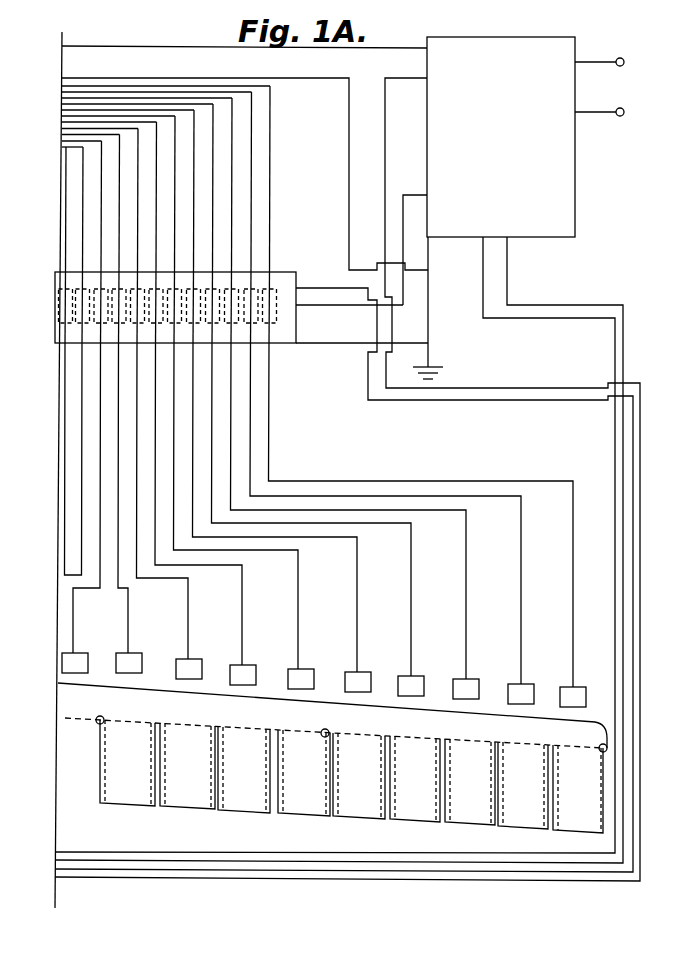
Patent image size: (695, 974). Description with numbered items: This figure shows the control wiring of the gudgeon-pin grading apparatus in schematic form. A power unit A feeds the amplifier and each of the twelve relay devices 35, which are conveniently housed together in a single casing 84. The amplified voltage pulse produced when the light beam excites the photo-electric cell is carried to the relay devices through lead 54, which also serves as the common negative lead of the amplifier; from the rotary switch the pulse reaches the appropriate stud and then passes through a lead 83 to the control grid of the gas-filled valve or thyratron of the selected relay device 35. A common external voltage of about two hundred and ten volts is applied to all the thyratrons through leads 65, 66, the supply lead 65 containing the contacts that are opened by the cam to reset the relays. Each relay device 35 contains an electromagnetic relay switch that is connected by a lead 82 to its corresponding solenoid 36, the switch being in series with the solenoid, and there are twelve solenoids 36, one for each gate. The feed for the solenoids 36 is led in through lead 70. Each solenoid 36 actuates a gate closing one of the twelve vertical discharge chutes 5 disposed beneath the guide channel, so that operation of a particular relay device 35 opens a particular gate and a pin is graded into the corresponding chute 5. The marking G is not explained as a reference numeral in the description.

The power unit A is at (555, 205).
The lead 54 is at (162, 78).
The lead 83 is at (214, 194).
The casing 84 is at (55, 276).
The relay device 35 is at (98, 326).
The lead 65 is at (313, 288).
The lead 70 is at (348, 306).
The lead 66 is at (355, 344).
The lead 82 is at (214, 428).
The solenoid 36 is at (192, 670).
The gate line G is at (190, 723).
The discharge chute 5 is at (200, 792).